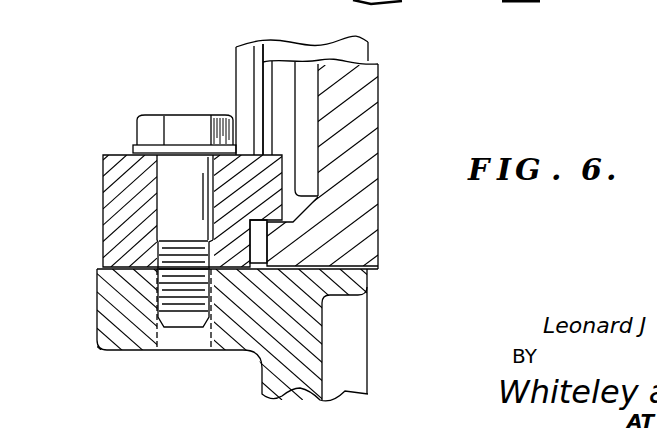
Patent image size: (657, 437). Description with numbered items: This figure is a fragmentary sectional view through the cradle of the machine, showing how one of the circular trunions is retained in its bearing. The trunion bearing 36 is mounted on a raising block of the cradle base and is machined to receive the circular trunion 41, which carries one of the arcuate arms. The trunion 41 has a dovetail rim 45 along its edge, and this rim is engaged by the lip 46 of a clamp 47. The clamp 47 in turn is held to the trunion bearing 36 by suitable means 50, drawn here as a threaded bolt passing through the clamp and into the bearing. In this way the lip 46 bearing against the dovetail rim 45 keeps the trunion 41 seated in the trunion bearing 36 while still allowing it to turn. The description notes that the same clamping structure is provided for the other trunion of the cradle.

The trunion bearing 36 is at (110, 307).
The trunion 41 is at (352, 168).
The dovetail rim 45 is at (275, 223).
The lip 46 is at (275, 222).
The clamp 47 is at (106, 168).
The suitable means 50 is at (178, 115).